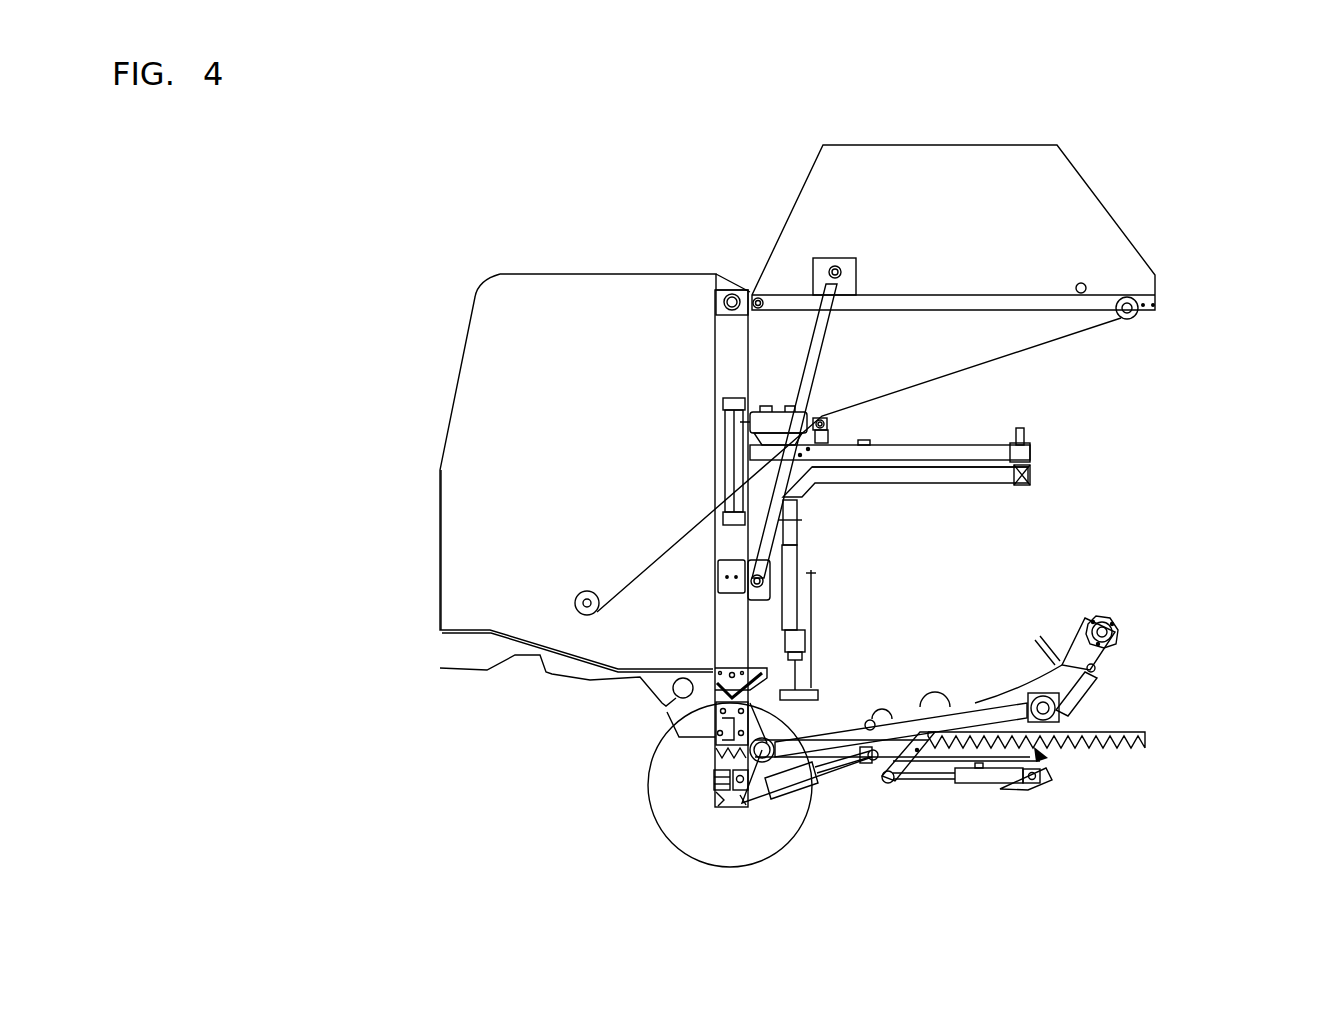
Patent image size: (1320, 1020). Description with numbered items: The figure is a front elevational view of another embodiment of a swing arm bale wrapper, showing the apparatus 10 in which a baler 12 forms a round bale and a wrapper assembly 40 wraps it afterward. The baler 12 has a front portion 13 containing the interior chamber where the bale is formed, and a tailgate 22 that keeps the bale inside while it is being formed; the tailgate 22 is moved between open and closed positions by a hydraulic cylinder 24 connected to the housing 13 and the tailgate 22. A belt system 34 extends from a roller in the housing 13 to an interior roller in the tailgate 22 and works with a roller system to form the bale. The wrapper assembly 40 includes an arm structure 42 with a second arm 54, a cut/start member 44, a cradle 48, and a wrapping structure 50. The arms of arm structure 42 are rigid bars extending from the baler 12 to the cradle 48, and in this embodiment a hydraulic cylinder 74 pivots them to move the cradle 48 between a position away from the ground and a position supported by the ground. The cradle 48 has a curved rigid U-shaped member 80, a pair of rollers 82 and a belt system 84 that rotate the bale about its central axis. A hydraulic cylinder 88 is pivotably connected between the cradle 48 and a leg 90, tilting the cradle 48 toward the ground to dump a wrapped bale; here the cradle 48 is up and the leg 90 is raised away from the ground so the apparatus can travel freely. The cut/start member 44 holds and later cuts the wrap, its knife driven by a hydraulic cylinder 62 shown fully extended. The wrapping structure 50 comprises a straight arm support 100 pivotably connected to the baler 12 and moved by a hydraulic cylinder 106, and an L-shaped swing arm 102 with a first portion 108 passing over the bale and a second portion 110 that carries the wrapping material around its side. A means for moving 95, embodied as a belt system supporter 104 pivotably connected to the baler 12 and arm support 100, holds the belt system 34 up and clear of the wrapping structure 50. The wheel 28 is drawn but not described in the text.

The apparatus 10 is at (467, 263).
The baler 12 is at (629, 268).
The front portion 13 is at (447, 423).
The tailgate 22 is at (953, 137).
The hydraulic cylinder 24 is at (812, 370).
The wheel 28 is at (665, 808).
The belt system 34 is at (1058, 343).
The wrapper assembly 40 is at (1238, 467).
The arm structure 42 is at (976, 726).
The cut/start member 44 is at (1144, 752).
The cradle 48 is at (1068, 642).
The wrapping structure 50 is at (963, 479).
The second arm 54 is at (868, 742).
The hydraulic cylinder 62 is at (975, 783).
The hydraulic cylinder 74 is at (790, 790).
The rigid U-shaped member 80 is at (1028, 688).
The rollers 82 is at (1113, 626).
The belt system 84 is at (995, 697).
The hydraulic cylinder 88 is at (1062, 716).
The leg 90 is at (1038, 772).
The means for moving 95 is at (820, 404).
The arm support 100 is at (967, 450).
The swing arm 102 is at (988, 485).
The belt system supporter 104 is at (824, 420).
The hydraulic cylinder 106 is at (771, 412).
The first portion 108 is at (905, 484).
The second portion 110 is at (790, 508).